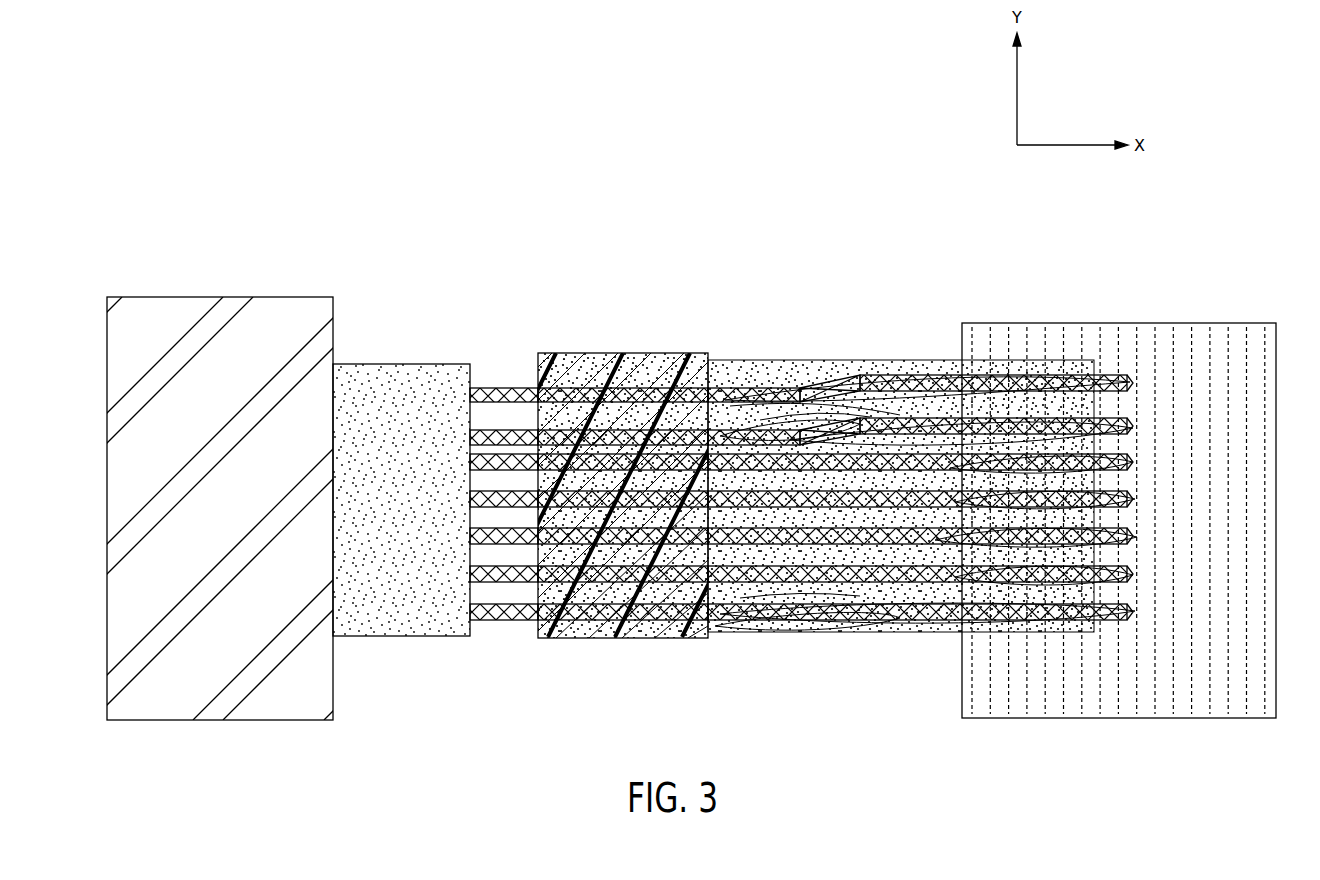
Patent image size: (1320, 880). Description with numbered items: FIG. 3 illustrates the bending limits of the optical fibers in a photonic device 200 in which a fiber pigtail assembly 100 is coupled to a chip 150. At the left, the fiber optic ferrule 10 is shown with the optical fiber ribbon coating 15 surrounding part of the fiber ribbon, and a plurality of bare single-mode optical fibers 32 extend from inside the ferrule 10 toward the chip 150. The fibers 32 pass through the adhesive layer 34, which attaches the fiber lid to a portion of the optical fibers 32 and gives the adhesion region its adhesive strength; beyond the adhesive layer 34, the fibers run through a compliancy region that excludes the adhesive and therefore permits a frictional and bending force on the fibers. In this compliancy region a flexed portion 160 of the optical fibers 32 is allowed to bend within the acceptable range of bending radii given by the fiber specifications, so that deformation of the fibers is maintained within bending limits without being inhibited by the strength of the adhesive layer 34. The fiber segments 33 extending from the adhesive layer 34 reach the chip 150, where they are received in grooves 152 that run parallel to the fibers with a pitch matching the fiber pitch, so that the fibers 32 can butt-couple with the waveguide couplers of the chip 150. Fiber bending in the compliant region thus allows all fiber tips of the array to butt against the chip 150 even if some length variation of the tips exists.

The fiber optic ferrule 10 is at (220, 303).
The optical fiber ribbon coating 15 is at (386, 362).
The optical fibers 32 is at (487, 432).
The fiber tows in matrix region 33 is at (892, 378).
The adhesive layer 34 is at (657, 353).
The fiber pigtail assembly 100 is at (619, 515).
The chip 150 is at (1026, 718).
The grooves 152 is at (1103, 372).
The flexed portion 160 is at (798, 365).
The photonic device 200 is at (714, 193).